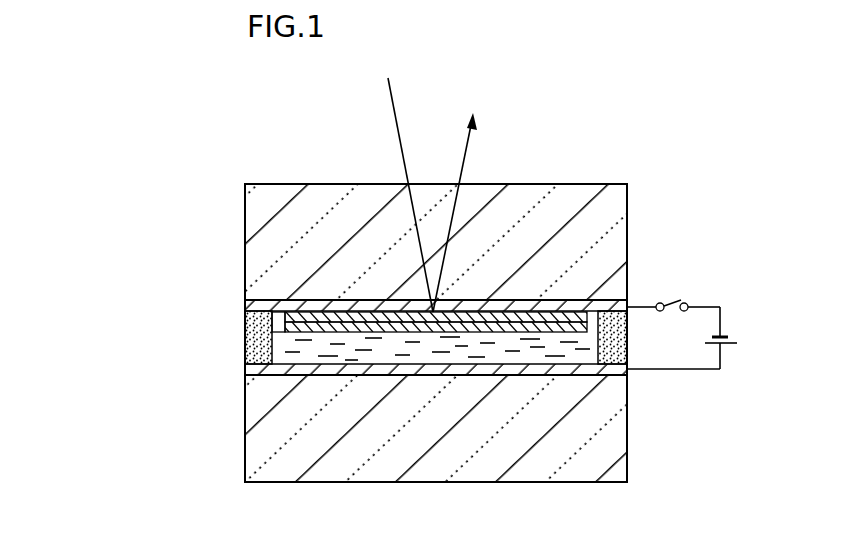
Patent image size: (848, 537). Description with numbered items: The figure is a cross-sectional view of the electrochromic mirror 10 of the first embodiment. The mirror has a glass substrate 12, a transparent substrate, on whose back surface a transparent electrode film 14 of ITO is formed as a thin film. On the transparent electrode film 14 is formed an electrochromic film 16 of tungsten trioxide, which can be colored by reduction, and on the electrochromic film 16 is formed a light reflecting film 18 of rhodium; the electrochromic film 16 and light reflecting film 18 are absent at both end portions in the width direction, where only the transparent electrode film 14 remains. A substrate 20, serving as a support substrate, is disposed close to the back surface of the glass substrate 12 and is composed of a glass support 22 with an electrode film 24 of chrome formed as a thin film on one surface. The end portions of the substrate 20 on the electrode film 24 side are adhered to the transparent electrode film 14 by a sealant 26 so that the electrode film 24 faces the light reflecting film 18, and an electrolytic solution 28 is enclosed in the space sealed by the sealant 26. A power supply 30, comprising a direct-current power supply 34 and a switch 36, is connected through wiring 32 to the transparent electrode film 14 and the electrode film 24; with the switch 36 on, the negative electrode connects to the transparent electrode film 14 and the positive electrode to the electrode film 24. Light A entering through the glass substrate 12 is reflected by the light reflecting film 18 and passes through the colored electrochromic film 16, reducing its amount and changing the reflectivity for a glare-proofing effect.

The electrochromic mirror 10 is at (556, 96).
The glass substrate 12 is at (245, 197).
The transparent electrode film 14 is at (332, 305).
The electrochromic film 16 is at (245, 313).
The light reflecting film 18 is at (249, 327).
The substrate 20 is at (166, 398).
The glass support 22 is at (245, 448).
The electrode film 24 is at (243, 377).
The sealant 26 is at (250, 345).
The electrolytic solution 28 is at (245, 366).
The power supply 30 is at (730, 296).
The wiring 32 is at (651, 306).
The direct-current power supply 34 is at (731, 337).
The switch 36 is at (685, 302).
The incident light A is at (398, 133).